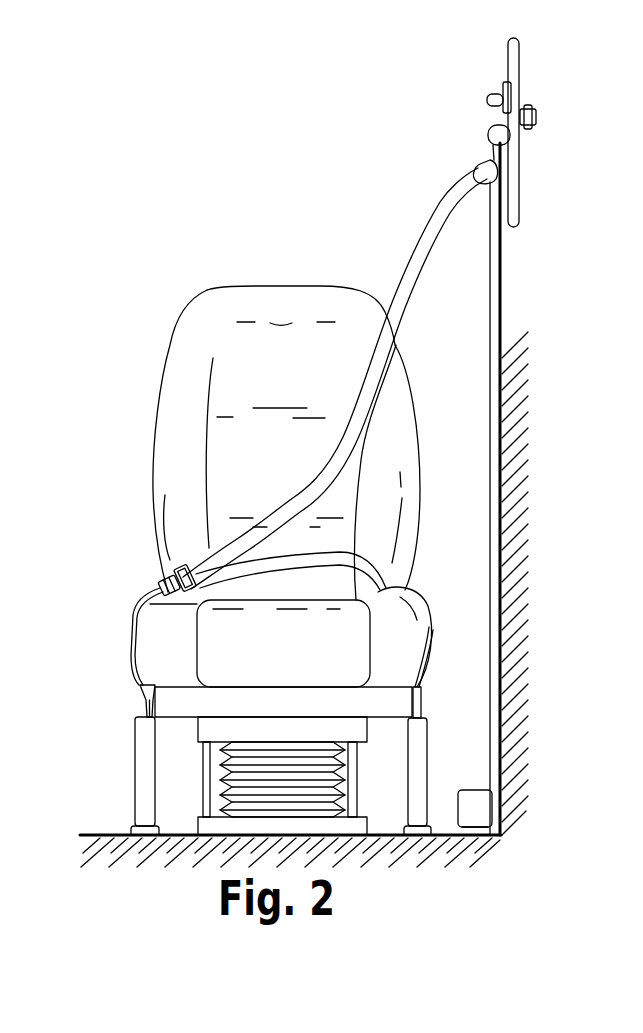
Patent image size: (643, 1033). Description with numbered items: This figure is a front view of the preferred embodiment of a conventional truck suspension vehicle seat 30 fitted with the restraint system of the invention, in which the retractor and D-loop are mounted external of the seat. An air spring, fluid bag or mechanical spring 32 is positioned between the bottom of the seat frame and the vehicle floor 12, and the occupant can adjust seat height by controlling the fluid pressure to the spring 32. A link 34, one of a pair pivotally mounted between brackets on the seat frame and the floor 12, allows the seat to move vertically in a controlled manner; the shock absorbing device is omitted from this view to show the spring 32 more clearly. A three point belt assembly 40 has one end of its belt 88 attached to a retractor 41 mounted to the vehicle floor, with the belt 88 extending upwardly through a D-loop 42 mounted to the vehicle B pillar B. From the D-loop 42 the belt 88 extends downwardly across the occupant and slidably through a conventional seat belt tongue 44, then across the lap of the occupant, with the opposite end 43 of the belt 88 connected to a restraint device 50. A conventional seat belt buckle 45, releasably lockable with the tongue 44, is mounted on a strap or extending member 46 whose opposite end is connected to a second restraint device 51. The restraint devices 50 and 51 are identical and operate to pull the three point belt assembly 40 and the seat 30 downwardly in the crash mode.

The vehicle floor 12 is at (102, 832).
The seat 30 is at (210, 294).
The air spring, fluid bag or mechanical spring 32 is at (280, 755).
The link 34 is at (200, 768).
The three point belt assembly 40 is at (407, 268).
The retractor 41 is at (478, 800).
The D-loop 42 is at (488, 161).
The opposite end of the belt 43 is at (430, 660).
The seat belt tongue 44 is at (179, 576).
The seat belt buckle 45 is at (161, 585).
The strap or extending member 46 is at (131, 640).
The restraint device 50 is at (421, 736).
The restraint device 51 is at (133, 775).
The belt 88 is at (354, 548).
The B pillar B is at (503, 284).